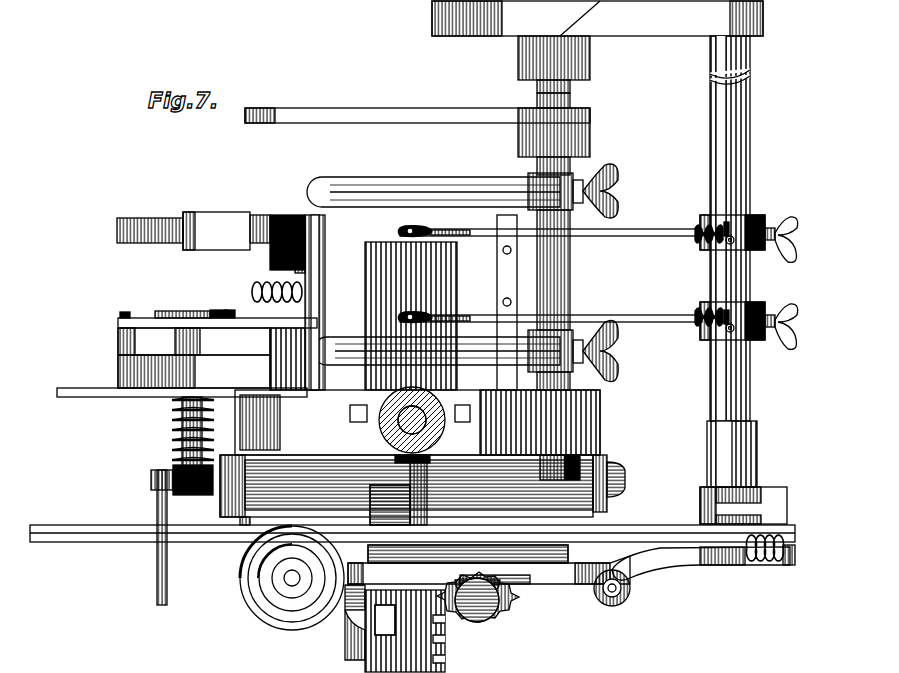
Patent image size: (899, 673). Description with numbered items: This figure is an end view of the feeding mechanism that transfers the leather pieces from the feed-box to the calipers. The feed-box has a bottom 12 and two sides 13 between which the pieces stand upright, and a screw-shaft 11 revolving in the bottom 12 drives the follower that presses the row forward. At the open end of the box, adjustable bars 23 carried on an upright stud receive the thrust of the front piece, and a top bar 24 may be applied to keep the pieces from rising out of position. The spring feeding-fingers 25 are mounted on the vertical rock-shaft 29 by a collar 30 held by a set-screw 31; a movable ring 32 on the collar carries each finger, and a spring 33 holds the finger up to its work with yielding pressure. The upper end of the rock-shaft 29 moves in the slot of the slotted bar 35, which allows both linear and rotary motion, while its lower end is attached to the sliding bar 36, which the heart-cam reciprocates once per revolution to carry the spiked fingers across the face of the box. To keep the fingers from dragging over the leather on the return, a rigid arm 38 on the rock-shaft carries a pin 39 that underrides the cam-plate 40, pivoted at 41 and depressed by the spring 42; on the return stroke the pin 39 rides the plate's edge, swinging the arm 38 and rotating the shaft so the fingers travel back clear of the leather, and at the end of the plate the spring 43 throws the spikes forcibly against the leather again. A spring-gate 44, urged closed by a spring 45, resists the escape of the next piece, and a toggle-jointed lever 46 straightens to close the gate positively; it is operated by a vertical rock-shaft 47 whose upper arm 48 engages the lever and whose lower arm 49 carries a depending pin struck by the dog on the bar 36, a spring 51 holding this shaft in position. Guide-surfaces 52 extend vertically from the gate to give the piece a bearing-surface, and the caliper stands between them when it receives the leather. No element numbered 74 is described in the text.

The slotted bar 35 is at (665, 12).
The vertical rock-shaft 29 is at (735, 137).
The top bar 24 is at (414, 116).
The adjustable bars 23 is at (452, 192).
The sides of the feed-box 13 is at (326, 232).
The block 74 is at (440, 285).
The spring feeding-fingers 25 is at (682, 204).
The collar 30 is at (753, 222).
The movable ring 32 is at (769, 234).
The set-screw 31 is at (780, 262).
The spring 33 is at (700, 243).
The bottom of the feed-box 12 is at (462, 397).
The screw-shaft 11 is at (440, 428).
The guide-surfaces 52 is at (211, 300).
The spring-gate 44 is at (322, 268).
The spring 45 is at (272, 284).
The arm 48 is at (217, 304).
The toggle-jointed lever 46 is at (246, 323).
The vertical rock-shaft 47 is at (172, 406).
The spring 51 is at (170, 428).
The arm 49 is at (150, 483).
The spring 42 is at (370, 522).
The sliding bar 36 is at (622, 536).
The pin 39 is at (586, 590).
The cam-plate 40 is at (538, 582).
The rigid arm 38 is at (680, 560).
The pivot 41 is at (630, 588).
The spring 43 is at (771, 568).